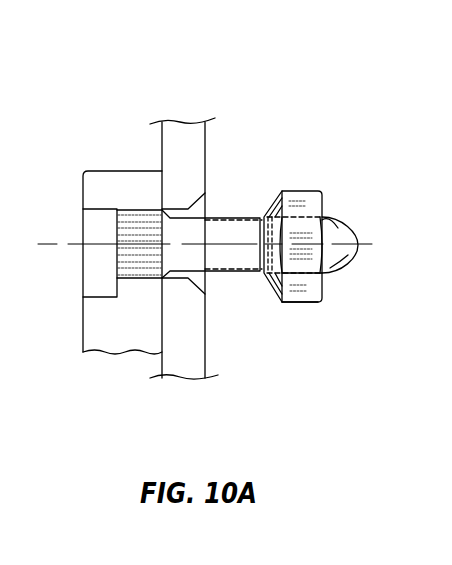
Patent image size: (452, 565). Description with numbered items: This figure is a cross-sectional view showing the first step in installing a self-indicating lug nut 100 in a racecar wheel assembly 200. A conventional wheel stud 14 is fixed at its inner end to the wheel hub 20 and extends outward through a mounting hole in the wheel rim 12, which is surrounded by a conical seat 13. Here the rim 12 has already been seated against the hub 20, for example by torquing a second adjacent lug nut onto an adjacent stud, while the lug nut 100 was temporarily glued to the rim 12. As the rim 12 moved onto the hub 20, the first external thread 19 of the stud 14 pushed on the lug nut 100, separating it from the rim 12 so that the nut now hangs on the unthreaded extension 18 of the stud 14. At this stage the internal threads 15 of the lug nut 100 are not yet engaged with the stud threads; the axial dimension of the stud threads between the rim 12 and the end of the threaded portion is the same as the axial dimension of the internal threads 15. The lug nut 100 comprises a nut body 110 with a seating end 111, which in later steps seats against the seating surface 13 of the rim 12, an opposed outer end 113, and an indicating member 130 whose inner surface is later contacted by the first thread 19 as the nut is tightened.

The wheel assembly 200 is at (300, 64).
The self-indicating lug nut 100 is at (296, 305).
The wheel rim 12 is at (183, 132).
The conical seat 13 is at (205, 292).
The internal threads 15 is at (102, 223).
The first external thread 19 is at (259, 217).
The wheel hub 20 is at (102, 333).
The lug nut body 110 is at (293, 191).
The seating end 111 is at (268, 292).
The outer end 113 is at (322, 284).
The indicating member 130 is at (323, 220).
The unthreaded extension 18 is at (338, 237).
The wheel stud 14 is at (343, 263).